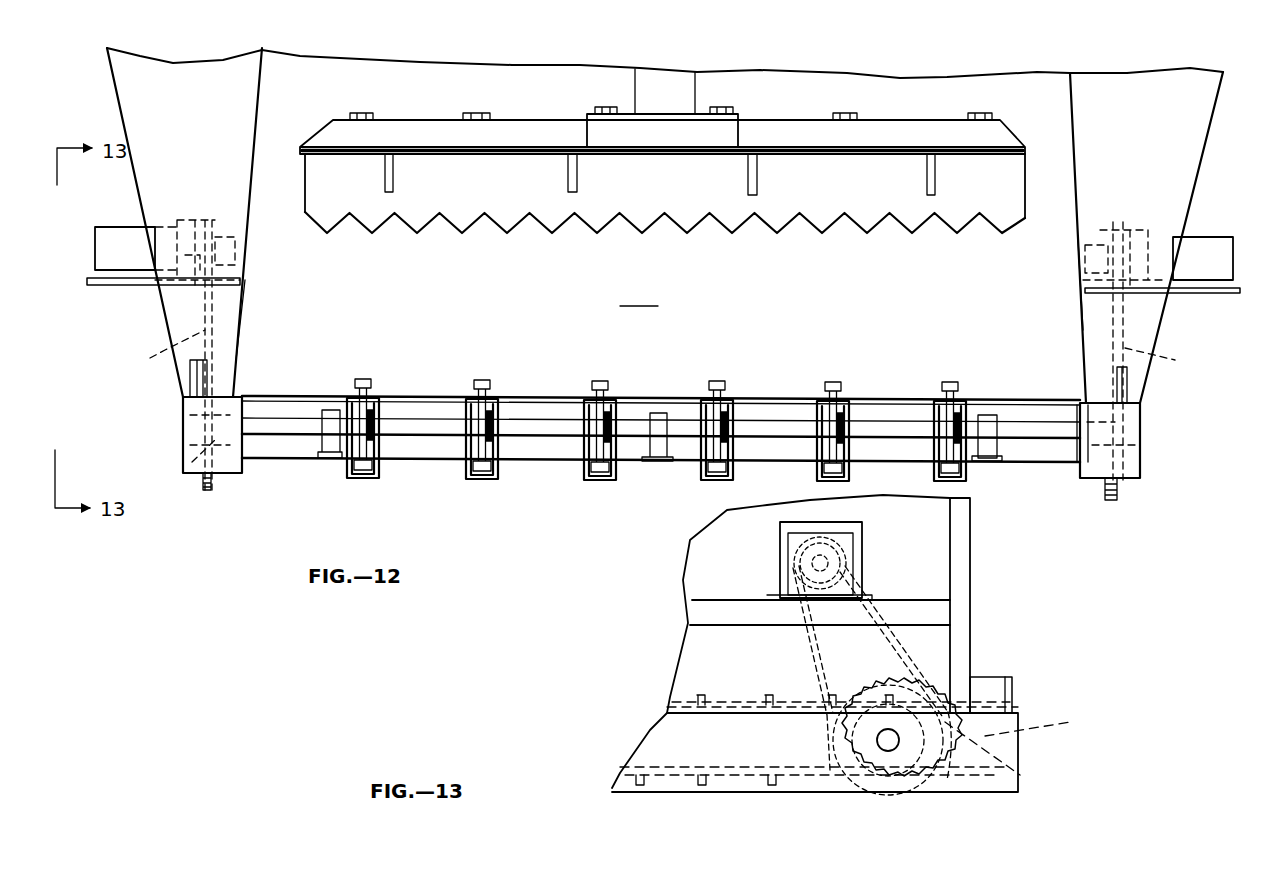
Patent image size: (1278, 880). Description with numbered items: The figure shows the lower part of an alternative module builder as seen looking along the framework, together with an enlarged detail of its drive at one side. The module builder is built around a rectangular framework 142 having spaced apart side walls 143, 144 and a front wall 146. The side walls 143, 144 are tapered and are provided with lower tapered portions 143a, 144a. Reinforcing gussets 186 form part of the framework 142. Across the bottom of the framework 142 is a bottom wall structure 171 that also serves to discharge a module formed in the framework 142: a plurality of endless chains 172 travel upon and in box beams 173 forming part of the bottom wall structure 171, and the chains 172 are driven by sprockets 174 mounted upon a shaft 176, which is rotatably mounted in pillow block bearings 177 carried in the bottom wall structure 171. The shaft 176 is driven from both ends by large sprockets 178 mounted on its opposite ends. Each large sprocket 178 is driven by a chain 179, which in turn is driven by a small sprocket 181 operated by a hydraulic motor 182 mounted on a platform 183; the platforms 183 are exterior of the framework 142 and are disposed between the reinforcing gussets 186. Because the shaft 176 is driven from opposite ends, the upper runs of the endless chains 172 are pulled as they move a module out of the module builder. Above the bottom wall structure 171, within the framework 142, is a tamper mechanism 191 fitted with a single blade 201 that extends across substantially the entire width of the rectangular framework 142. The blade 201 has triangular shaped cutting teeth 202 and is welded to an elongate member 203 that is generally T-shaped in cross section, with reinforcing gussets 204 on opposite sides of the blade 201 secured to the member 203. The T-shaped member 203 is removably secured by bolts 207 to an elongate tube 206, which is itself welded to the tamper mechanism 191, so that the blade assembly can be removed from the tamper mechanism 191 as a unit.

In FIG. 12, the rectangular framework 142 is at (322, 86).
In FIG. 12, the side wall 143 is at (255, 186).
In FIG. 12, the lower tapered portion 143a is at (243, 292).
In FIG. 12, the side wall 144 is at (1080, 154).
In FIG. 12, the lower tapered portion 144a is at (1076, 212).
In FIG. 12, the front wall 146 is at (638, 295).
In FIG. 12, the bottom wall structure 171 is at (433, 368).
In FIG. 12, the endless chains 172 is at (497, 385).
In FIG. 12, the box beams 173 is at (380, 472).
In FIG. 13, the box beams 173 is at (990, 785).
In FIG. 12, the sprockets 174 is at (377, 432).
In FIG. 13, the sprockets 174 is at (1032, 743).
In FIG. 12, the shaft 176 is at (795, 432).
In FIG. 12, the pillow block bearings 177 is at (320, 437).
In FIG. 12, the large sprockets 178 is at (200, 470).
In FIG. 13, the large sprockets 178 is at (880, 808).
In FIG. 12, the chains 179 is at (662, 353).
In FIG. 13, the chains 179 is at (930, 640).
In FIG. 13, the small sprockets 181 is at (858, 558).
In FIG. 12, the hydraulic motors 182 is at (135, 235).
In FIG. 13, the hydraulic motors 182 is at (785, 530).
In FIG. 12, the platforms 183 is at (150, 287).
In FIG. 13, the platforms 183 is at (735, 622).
In FIG. 12, the reinforcing gussets 186 is at (128, 92).
In FIG. 12, the tamper mechanism 191 is at (692, 60).
In FIG. 12, the blade 201 is at (548, 205).
In FIG. 12, the cutting teeth 202 is at (413, 227).
In FIG. 12, the elongate member 203 is at (908, 128).
In FIG. 12, the reinforcing gussets 204 is at (758, 162).
In FIG. 12, the elongate tube 206 is at (695, 122).
In FIG. 12, the bolts 207 is at (601, 106).